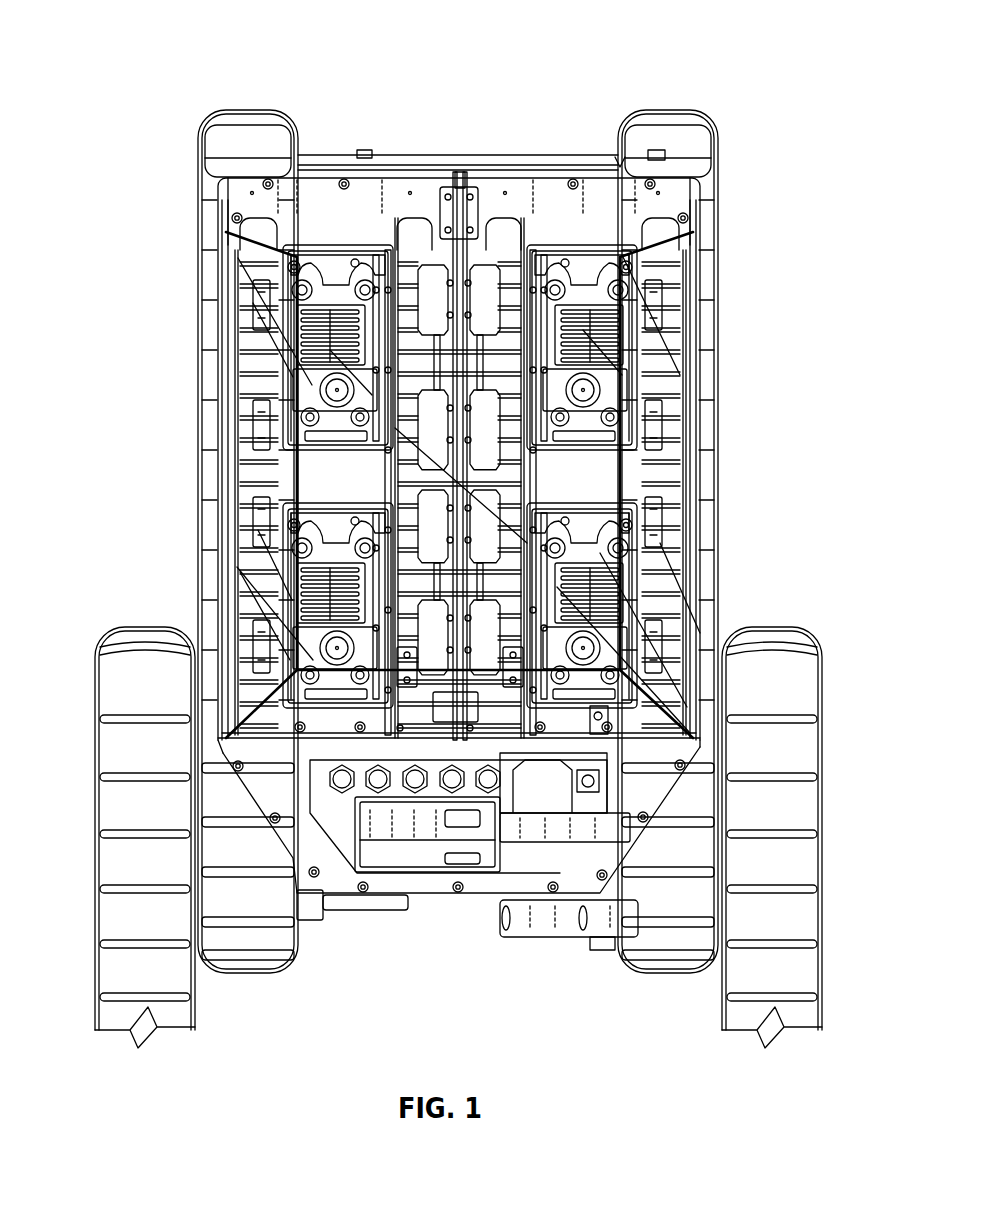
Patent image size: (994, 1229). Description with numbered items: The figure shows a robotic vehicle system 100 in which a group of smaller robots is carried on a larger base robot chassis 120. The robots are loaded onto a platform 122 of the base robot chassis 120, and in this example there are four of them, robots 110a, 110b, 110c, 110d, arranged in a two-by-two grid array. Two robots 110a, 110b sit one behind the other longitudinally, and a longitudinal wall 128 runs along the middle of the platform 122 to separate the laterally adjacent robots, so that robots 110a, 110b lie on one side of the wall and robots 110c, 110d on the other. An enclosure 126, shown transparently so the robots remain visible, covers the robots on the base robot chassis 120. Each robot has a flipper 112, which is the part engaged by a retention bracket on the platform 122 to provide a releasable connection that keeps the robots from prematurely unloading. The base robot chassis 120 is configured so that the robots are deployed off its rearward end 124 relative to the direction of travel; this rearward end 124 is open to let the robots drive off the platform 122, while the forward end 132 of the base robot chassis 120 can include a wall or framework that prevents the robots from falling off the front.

The robotic vehicle system 100 is at (118, 38).
The robot 110a is at (310, 383).
The robot 110b is at (313, 527).
The robot 110c is at (603, 390).
The robot 110d is at (610, 527).
The flipper 112 is at (220, 290).
The base robot chassis 120 is at (777, 632).
The platform 122 is at (663, 205).
The rearward end 124 is at (482, 153).
The enclosure 126 is at (600, 720).
The longitudinal wall 128 is at (458, 200).
The forward end 132 is at (452, 895).